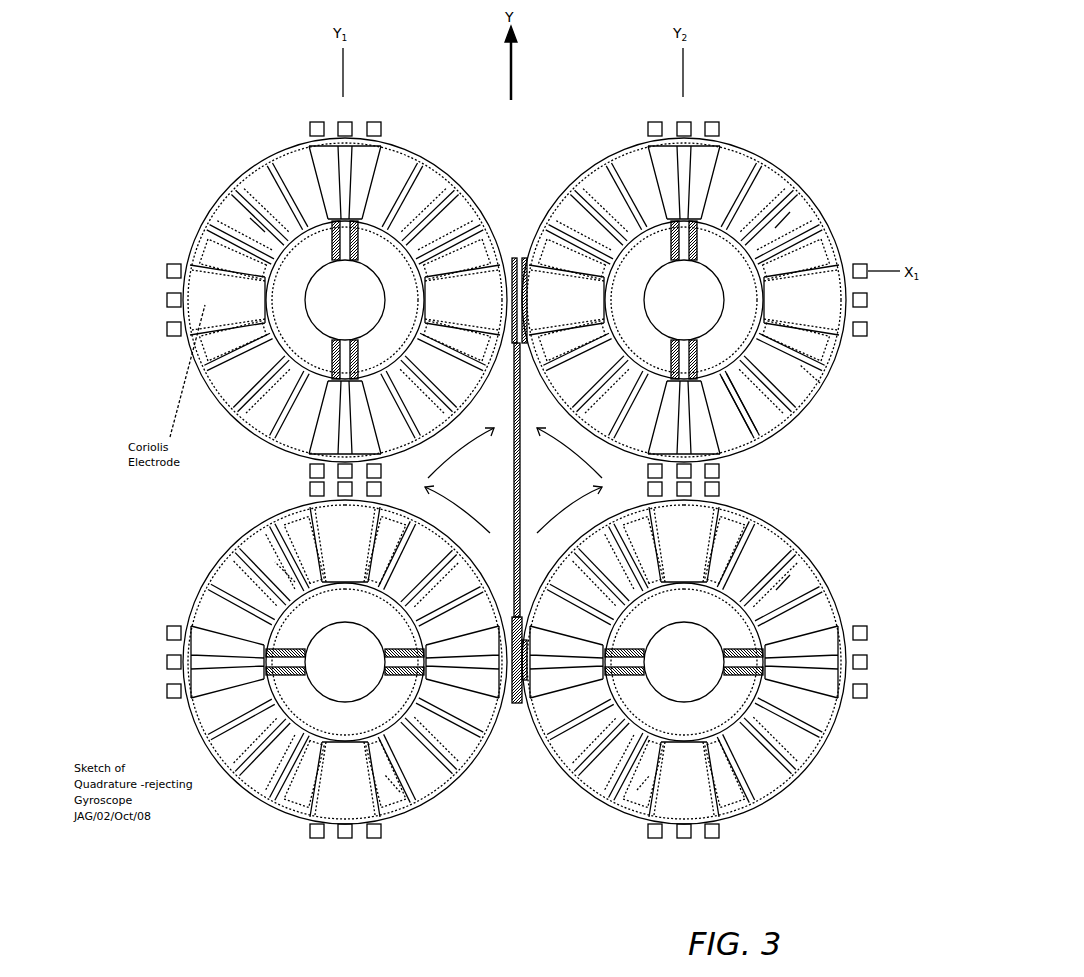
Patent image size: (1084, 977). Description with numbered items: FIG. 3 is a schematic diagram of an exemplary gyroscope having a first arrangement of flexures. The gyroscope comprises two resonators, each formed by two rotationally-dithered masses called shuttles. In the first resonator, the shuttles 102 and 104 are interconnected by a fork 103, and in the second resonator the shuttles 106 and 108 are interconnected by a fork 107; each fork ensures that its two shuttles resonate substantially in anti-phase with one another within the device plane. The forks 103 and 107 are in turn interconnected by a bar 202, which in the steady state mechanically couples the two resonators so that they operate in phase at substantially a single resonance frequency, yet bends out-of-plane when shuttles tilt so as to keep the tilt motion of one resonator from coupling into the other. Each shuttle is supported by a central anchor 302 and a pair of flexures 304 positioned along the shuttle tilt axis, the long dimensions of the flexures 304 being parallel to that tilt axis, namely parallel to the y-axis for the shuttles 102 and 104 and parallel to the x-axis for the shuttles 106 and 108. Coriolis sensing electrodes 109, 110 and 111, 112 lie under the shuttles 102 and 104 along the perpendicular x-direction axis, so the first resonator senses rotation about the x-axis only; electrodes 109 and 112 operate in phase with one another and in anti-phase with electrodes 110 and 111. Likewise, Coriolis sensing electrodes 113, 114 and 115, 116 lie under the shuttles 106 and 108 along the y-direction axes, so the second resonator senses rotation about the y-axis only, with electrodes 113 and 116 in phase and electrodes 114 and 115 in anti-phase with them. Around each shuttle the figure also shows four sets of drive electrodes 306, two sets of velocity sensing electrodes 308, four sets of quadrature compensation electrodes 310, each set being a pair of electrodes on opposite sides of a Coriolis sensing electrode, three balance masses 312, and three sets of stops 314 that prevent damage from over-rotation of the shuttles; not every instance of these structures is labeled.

The shuttle 102 is at (266, 154).
The shuttle 104 is at (770, 138).
The shuttle 106 is at (283, 813).
The shuttle 108 is at (798, 762).
The fork 103 is at (517, 250).
The fork 107 is at (521, 710).
The Coriolis sensing electrode 109 is at (235, 304).
The Coriolis sensing electrode 110 is at (492, 304).
The Coriolis sensing electrode 111 is at (572, 304).
The Coriolis sensing electrode 112 is at (828, 304).
The Coriolis sensing electrode 113 is at (362, 548).
The Coriolis sensing electrode 114 is at (362, 800).
The Coriolis sensing electrode 115 is at (700, 531).
The Coriolis sensing electrode 116 is at (700, 800).
The bar 202 is at (521, 506).
The central anchor 302 is at (698, 685).
The flexures 304 is at (753, 430).
The drive electrodes 306 is at (812, 550).
The velocity sensing electrodes 308 is at (370, 158).
The quadrature compensation electrodes 310 is at (820, 383).
The balance masses 312 is at (166, 300).
The stops 314 is at (308, 470).